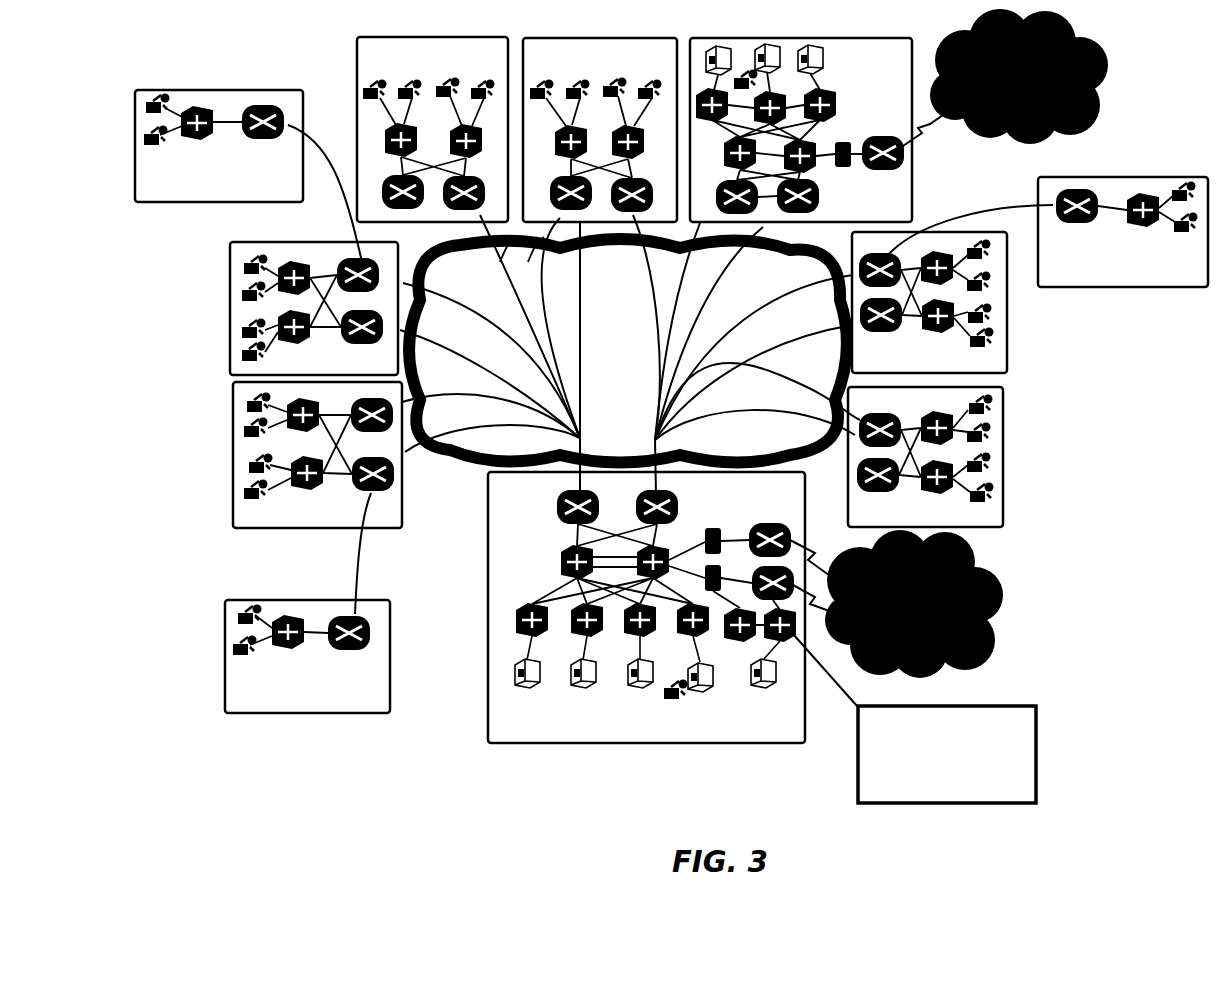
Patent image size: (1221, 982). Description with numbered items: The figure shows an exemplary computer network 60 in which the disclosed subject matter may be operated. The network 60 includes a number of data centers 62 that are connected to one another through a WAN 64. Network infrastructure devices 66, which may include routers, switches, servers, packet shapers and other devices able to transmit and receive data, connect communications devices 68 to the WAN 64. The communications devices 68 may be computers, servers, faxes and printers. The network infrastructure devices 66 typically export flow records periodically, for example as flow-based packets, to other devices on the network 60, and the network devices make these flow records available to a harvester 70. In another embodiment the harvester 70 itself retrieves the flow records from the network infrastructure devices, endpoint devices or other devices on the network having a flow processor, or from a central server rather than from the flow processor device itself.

The network 60 is at (1095, 590).
The data center 62 is at (455, 71).
The WAN 64 is at (713, 351).
The network infrastructure device 66 is at (518, 614).
The communications device 68 is at (250, 603).
The harvester 70 is at (1037, 756).